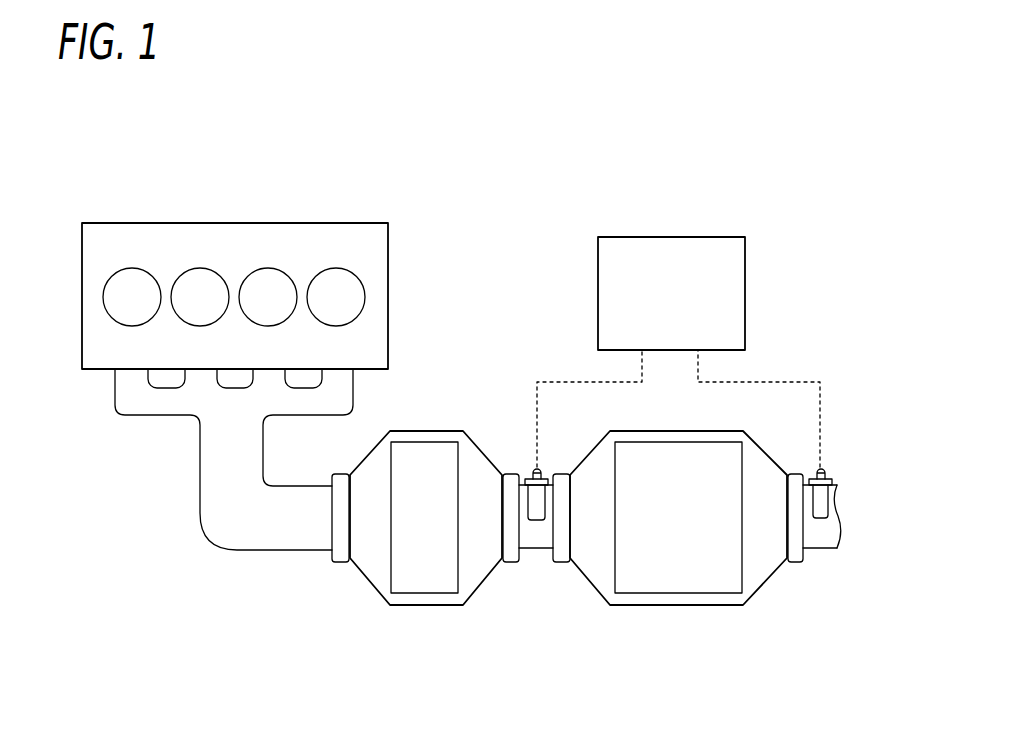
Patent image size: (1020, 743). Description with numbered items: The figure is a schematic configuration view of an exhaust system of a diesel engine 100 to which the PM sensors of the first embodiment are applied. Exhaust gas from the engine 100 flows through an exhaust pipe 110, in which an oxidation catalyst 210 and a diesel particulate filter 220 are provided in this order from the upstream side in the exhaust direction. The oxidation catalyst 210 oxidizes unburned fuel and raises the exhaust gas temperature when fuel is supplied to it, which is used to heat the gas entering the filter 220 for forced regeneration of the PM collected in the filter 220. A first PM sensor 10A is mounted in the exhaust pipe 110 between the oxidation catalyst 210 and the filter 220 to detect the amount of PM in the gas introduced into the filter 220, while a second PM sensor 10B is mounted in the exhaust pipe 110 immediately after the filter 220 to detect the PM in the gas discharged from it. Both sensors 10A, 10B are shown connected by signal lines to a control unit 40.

The diesel engine 100 is at (318, 237).
The exhaust pipe 110 is at (268, 551).
The oxidation catalyst 210 is at (445, 529).
The diesel particulate filter 220 is at (700, 529).
The first PM sensor 10A is at (521, 461).
The second PM sensor 10B is at (837, 458).
The ECU (electronic control unit) 40 is at (598, 258).